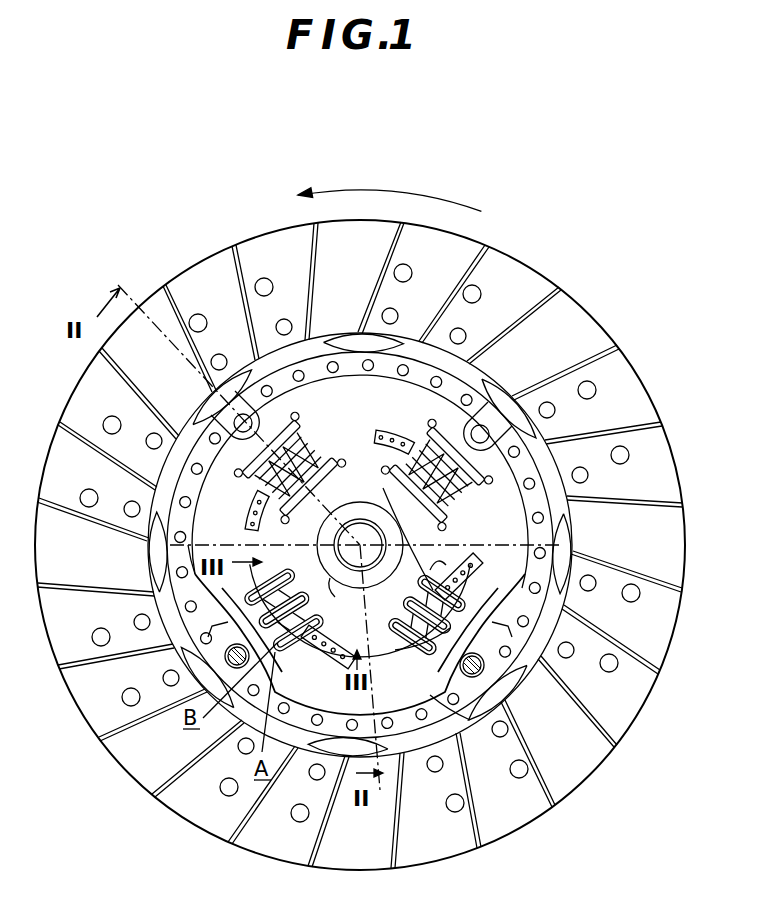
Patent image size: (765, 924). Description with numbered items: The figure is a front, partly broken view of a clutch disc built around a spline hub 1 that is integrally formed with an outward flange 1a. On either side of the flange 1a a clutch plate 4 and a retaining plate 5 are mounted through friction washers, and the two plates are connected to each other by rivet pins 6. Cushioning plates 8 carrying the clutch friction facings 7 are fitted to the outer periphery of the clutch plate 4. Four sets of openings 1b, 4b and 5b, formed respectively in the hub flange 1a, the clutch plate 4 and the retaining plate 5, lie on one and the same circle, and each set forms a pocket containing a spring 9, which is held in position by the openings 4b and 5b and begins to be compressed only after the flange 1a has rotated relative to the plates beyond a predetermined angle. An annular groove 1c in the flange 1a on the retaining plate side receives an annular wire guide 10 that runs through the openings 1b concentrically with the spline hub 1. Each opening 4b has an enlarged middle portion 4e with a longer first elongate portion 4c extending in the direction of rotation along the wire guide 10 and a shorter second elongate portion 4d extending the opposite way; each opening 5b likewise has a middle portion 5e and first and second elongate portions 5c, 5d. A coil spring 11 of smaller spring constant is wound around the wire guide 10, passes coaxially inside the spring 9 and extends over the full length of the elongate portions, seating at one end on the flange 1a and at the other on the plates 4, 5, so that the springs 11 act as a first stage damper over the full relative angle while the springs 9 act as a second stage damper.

The spline hub 1 is at (395, 562).
The outward flange 1a is at (545, 610).
The opening of the hub flange 1b is at (478, 578).
The annular groove 1c is at (462, 728).
The clutch plate 4 is at (472, 587).
The opening of the clutch plate 4b is at (392, 490).
The first elongate portion 4c is at (490, 606).
The second elongate portion 4d is at (250, 556).
The enlarged middle portion 4e is at (192, 586).
The retaining plate 5 is at (498, 477).
The opening of the retaining plate 5b is at (305, 432).
The first elongate portion 5c is at (243, 507).
The second elongate portion 5d is at (323, 455).
The enlarged middle portion 5e is at (288, 519).
The rivet pin 6 is at (252, 419).
The clutch friction facing 7 is at (681, 557).
The cushioning plate 8 is at (572, 519).
The spring 9 is at (285, 580).
The annular wire guide 10 is at (382, 668).
The coil spring 11 is at (278, 645).